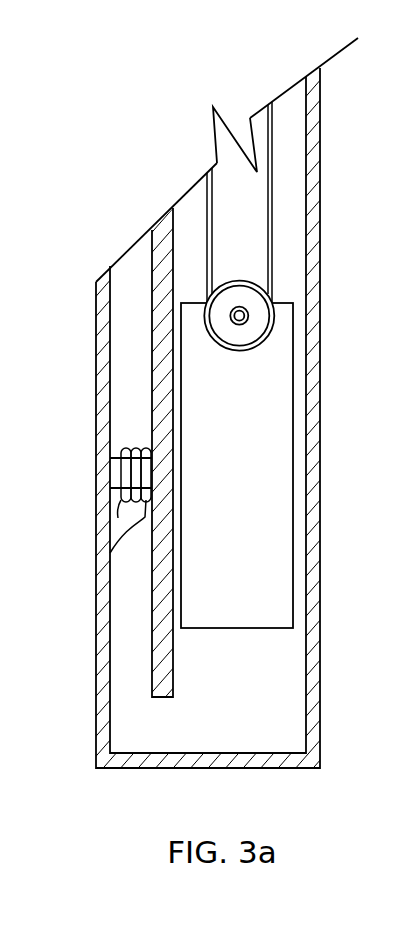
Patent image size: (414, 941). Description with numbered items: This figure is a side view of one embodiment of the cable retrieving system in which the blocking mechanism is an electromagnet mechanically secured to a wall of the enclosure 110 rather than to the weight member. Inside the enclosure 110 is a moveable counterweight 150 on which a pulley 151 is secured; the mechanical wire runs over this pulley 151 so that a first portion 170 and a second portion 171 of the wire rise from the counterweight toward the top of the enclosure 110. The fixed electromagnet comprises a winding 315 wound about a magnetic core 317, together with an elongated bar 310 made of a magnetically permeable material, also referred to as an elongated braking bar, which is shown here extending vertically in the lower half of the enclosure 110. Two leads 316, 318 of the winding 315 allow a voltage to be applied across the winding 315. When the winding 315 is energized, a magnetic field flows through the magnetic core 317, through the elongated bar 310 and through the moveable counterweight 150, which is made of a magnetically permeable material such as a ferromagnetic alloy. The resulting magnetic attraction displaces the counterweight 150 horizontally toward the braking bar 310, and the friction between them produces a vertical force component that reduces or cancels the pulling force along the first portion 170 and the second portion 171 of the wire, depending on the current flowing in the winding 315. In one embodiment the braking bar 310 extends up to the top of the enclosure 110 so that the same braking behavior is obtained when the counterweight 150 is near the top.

The enclosure 110 is at (313, 472).
The moveable counterweight 150 is at (283, 603).
The pulley 151 is at (243, 335).
The first portion of the mechanical wire 170 is at (213, 217).
The second portion of the mechanical wire 171 is at (267, 235).
The elongated bar 310 is at (160, 683).
The winding 315 is at (127, 452).
The lead 316 is at (110, 553).
The magnetic core 317 is at (118, 482).
The lead 318 is at (115, 508).